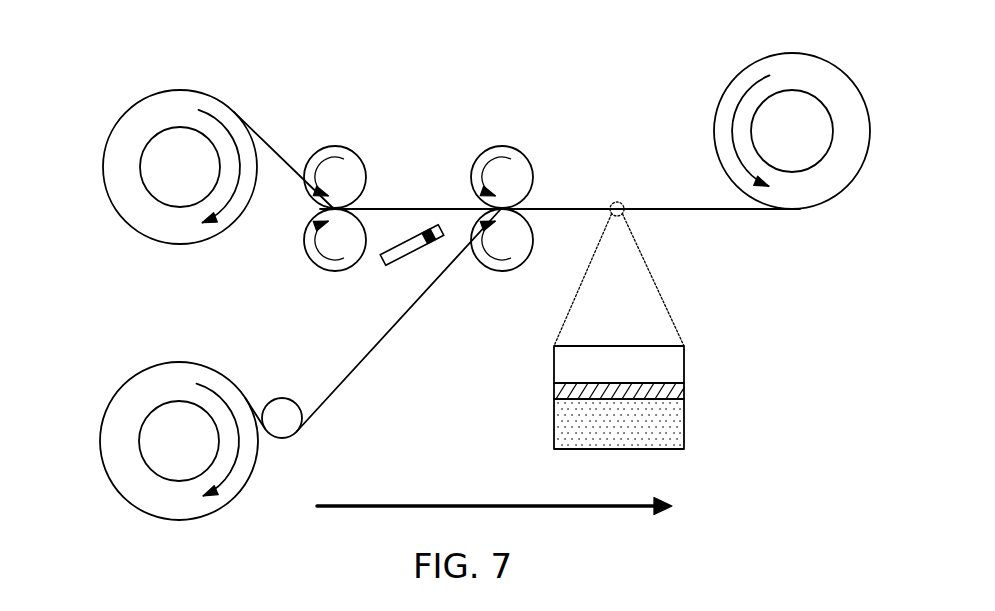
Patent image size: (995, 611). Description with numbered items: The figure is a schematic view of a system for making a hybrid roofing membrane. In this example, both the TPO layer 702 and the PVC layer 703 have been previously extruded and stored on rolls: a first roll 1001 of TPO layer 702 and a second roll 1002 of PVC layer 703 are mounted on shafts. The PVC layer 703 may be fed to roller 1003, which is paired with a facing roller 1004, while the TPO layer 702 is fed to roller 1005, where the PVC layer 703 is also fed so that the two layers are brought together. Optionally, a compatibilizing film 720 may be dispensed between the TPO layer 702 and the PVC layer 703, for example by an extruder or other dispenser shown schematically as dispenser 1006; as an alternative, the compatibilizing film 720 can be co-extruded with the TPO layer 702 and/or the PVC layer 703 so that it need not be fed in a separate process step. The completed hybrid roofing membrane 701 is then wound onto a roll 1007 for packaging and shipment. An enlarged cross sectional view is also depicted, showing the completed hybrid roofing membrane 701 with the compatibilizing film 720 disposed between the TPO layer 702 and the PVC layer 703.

The first roll 1001 is at (143, 388).
The second roll 1002 is at (128, 130).
The roller 1003 is at (307, 253).
The upper roller 1004 is at (338, 155).
The roller 1005 is at (525, 230).
The dispenser 1006 is at (385, 262).
The roll 1007 is at (730, 97).
The hybrid roofing membrane 701 is at (642, 210).
The TPO layer 702 is at (373, 343).
The PVC layer 703 is at (272, 148).
The compatibilizing film 720 is at (684, 390).